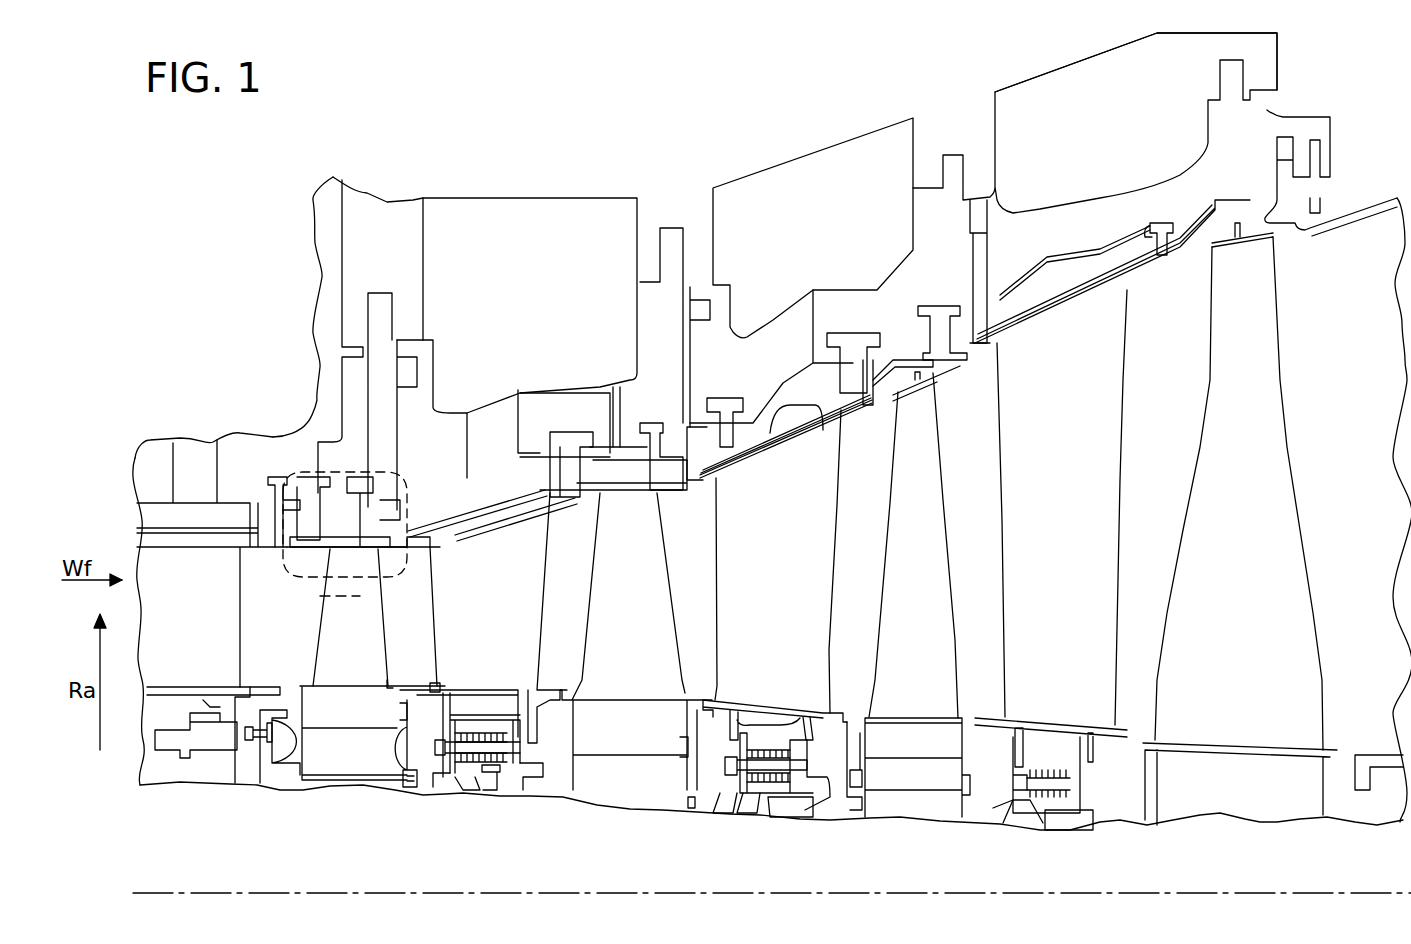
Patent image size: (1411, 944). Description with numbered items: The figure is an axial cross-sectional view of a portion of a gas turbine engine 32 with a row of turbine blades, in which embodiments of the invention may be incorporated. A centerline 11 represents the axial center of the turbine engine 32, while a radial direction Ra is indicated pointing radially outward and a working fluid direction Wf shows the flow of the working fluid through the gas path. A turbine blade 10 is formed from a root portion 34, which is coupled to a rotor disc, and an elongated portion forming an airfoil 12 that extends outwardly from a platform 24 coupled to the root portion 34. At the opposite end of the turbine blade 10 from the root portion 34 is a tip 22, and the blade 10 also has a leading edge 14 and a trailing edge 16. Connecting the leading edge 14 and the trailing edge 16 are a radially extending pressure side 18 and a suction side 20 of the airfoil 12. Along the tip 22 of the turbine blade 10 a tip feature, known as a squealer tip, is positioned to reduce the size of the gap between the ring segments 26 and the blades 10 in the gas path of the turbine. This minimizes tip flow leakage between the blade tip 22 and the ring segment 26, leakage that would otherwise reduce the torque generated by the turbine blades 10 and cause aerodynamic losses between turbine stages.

The turbine blade 10 is at (376, 797).
The centerline 11 is at (748, 893).
The airfoil 12 is at (370, 582).
The leading edge 14 is at (318, 625).
The trailing edge 16 is at (387, 652).
The pressure side 18 is at (318, 594).
The suction side 20 is at (337, 657).
The tip 22 is at (423, 547).
The platform 24 is at (340, 688).
The ring segments 26 is at (343, 545).
The turbine engine 32 is at (921, 77).
The root portion 34 is at (363, 687).